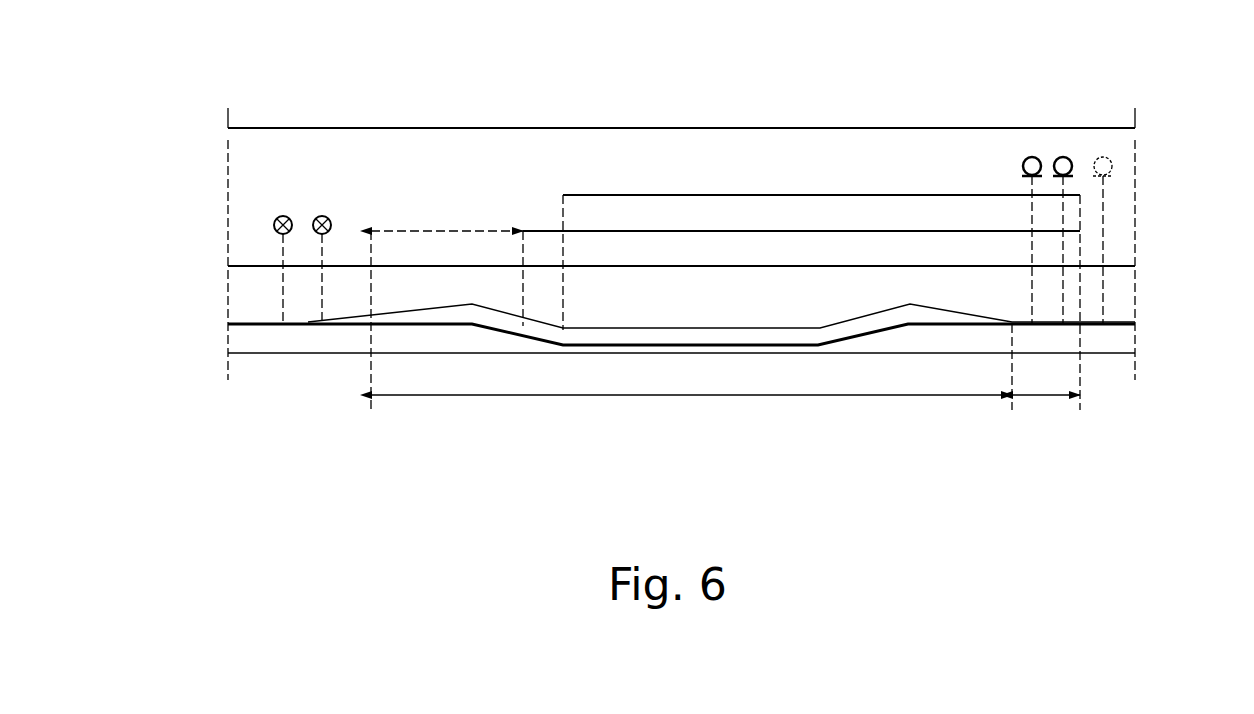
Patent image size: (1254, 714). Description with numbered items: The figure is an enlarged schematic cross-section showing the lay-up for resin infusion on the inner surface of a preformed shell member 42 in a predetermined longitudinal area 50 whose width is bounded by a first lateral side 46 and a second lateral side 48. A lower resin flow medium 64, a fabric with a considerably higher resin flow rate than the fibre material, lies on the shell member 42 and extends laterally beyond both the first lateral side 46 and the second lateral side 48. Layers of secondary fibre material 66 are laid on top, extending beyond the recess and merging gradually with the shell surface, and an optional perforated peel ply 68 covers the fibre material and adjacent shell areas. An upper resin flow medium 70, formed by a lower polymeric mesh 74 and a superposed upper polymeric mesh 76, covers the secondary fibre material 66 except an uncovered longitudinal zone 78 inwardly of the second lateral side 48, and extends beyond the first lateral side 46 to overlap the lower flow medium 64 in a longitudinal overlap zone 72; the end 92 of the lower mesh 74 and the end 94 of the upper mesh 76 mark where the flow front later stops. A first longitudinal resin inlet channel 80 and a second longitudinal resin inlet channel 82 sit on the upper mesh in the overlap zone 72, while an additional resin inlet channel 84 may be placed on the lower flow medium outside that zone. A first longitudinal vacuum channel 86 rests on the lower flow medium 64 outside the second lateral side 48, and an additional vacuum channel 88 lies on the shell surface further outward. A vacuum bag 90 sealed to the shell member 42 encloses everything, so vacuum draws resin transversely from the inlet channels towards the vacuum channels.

The preformed shell member 42 is at (250, 345).
The first lateral side 46 is at (1028, 326).
The second lateral side 48 is at (371, 326).
The predetermined longitudinal area 50 is at (691, 367).
The lower resin flow medium 64 is at (1135, 322).
The secondary fibre material 66 is at (875, 317).
The perforated peel ply 68 is at (247, 266).
The upper resin flow medium 70 is at (1201, 192).
The longitudinal overlap zone 72 is at (1046, 380).
The lower polymeric mesh 74 is at (1080, 231).
The upper polymeric mesh 76 is at (1080, 195).
The uncovered longitudinal zone 78 is at (447, 307).
The first longitudinal resin inlet channel 80 is at (1032, 157).
The second longitudinal resin inlet channel 82 is at (1063, 157).
The additional longitudinal resin inlet channel 84 is at (1103, 157).
The first longitudinal vacuum channel 86 is at (317, 218).
The additional longitudinal vacuum channel 88 is at (278, 218).
The vacuum bag 90 is at (290, 128).
The end of the lower mesh 92 is at (523, 231).
The end of the upper mesh 94 is at (563, 195).